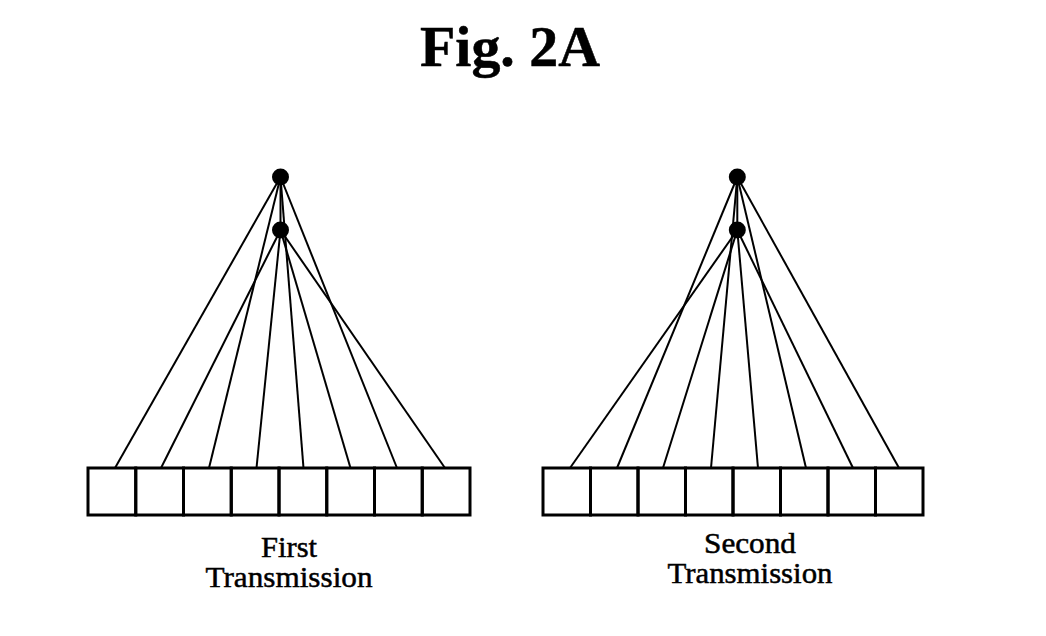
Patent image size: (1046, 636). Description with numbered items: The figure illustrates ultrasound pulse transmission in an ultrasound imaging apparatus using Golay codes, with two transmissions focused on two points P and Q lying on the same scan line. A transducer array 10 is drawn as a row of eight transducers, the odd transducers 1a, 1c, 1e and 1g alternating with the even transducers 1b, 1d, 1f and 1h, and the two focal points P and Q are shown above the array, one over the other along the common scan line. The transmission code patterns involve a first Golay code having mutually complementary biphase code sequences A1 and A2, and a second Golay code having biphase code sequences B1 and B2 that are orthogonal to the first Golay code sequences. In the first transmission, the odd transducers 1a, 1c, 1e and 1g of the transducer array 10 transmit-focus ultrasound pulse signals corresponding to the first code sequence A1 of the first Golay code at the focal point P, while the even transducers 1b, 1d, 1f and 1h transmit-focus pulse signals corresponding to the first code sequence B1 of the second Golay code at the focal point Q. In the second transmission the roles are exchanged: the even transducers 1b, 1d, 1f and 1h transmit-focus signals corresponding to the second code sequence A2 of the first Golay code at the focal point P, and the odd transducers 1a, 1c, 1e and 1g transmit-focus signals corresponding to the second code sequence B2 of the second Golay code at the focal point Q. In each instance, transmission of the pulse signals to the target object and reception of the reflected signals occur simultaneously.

The transducer array 10 is at (525, 516).
The odd transducer 1a is at (339, 491).
The even transducer 1b is at (387, 491).
The odd transducer 1c is at (435, 491).
The even transducer 1d is at (482, 491).
The odd transducer 1e is at (530, 491).
The even transducer 1f is at (577, 491).
The odd transducer 1g is at (625, 491).
The even transducer 1h is at (672, 491).
The focal point P is at (493, 181).
The focal point Q is at (475, 212).
The first code sequence of the first Golay code A1 is at (198, 322).
The first code sequence of the second Golay code B1 is at (363, 349).
The second code sequence of the first Golay code A2 is at (818, 322).
The second code sequence of the second Golay code B2 is at (653, 349).